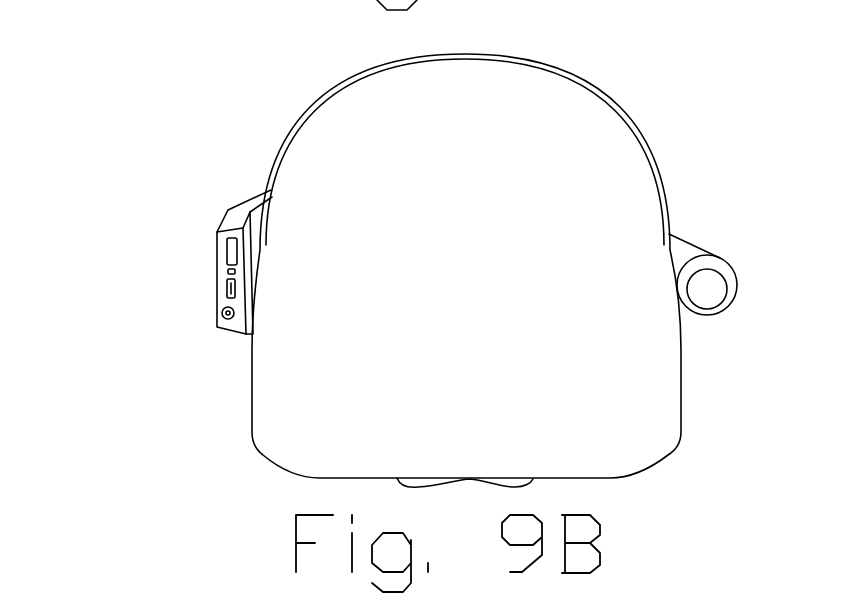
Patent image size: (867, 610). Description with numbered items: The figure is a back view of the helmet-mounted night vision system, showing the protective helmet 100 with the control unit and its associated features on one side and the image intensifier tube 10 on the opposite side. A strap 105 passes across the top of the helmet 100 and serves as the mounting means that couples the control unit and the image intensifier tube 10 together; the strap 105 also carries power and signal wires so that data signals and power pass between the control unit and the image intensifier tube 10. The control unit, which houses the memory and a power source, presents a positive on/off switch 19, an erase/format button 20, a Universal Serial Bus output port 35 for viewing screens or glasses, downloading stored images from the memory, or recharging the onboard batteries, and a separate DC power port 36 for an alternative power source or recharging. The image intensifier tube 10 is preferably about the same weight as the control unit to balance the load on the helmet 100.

The helmet 100 is at (488, 309).
The strap 105 is at (300, 127).
The image intensifier tube 10 is at (765, 215).
The erase/format button 20 is at (225, 252).
The positive on/off switch 19 is at (223, 273).
The Universal Serial Bus output port 35 is at (223, 293).
The DC power port 36 is at (117, 362).